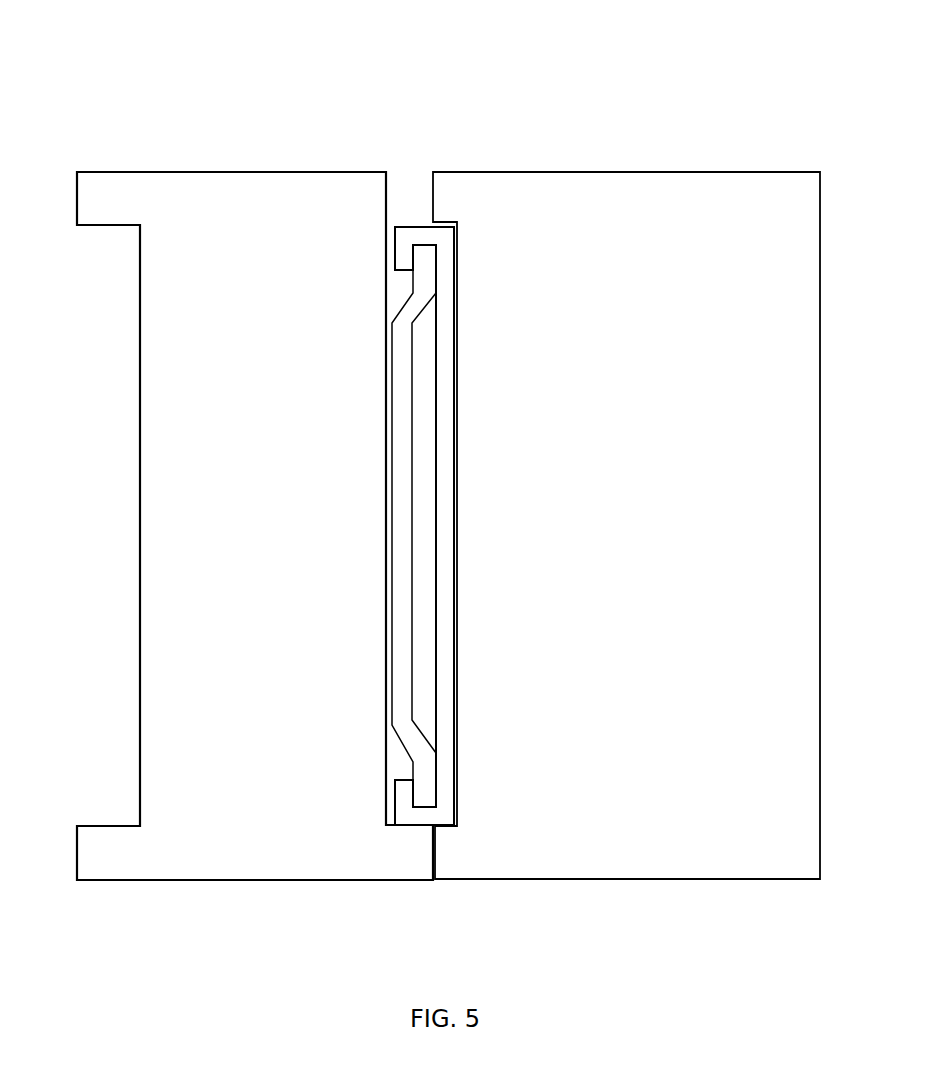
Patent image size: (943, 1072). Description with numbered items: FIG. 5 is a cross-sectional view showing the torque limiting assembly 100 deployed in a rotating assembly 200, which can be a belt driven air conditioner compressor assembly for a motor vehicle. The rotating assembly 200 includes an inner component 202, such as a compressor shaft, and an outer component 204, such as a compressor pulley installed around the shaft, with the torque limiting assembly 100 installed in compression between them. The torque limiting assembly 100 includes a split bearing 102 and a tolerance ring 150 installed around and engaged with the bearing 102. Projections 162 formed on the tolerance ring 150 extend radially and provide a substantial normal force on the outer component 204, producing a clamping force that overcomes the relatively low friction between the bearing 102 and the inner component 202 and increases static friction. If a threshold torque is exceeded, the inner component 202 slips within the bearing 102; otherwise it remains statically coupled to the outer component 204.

The torque limiting assembly 100 is at (413, 158).
The bearing 102 is at (410, 235).
The tolerance ring 150 is at (403, 620).
The projections 162 is at (403, 405).
The rotating assembly 200 is at (643, 62).
The inner component 202 is at (736, 200).
The outer component 204 is at (103, 203).